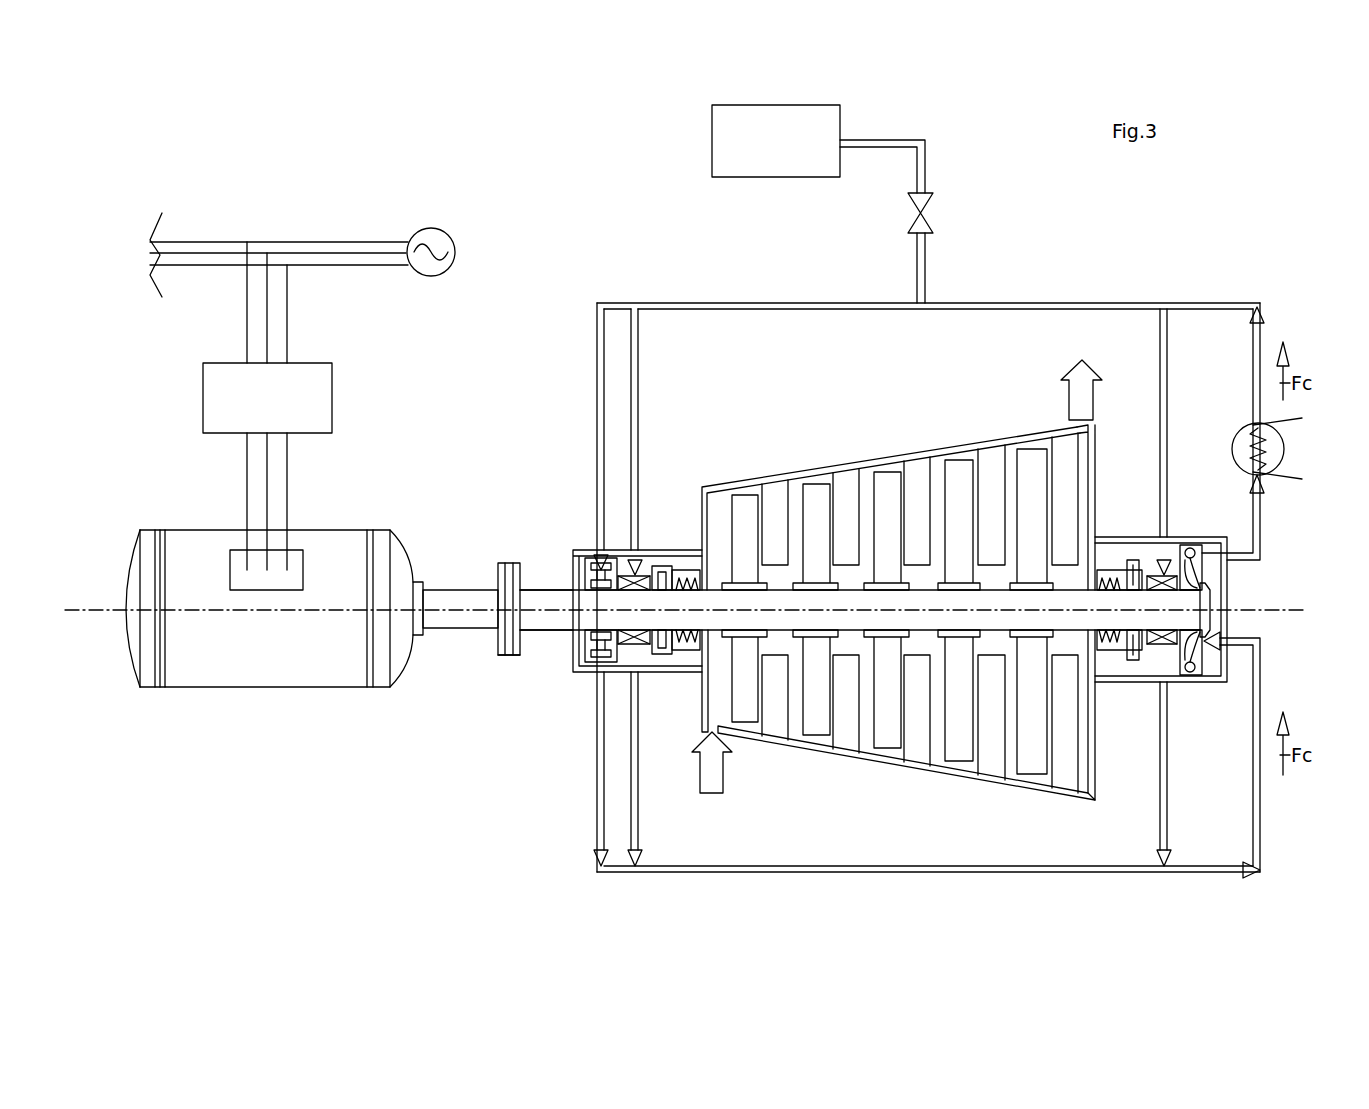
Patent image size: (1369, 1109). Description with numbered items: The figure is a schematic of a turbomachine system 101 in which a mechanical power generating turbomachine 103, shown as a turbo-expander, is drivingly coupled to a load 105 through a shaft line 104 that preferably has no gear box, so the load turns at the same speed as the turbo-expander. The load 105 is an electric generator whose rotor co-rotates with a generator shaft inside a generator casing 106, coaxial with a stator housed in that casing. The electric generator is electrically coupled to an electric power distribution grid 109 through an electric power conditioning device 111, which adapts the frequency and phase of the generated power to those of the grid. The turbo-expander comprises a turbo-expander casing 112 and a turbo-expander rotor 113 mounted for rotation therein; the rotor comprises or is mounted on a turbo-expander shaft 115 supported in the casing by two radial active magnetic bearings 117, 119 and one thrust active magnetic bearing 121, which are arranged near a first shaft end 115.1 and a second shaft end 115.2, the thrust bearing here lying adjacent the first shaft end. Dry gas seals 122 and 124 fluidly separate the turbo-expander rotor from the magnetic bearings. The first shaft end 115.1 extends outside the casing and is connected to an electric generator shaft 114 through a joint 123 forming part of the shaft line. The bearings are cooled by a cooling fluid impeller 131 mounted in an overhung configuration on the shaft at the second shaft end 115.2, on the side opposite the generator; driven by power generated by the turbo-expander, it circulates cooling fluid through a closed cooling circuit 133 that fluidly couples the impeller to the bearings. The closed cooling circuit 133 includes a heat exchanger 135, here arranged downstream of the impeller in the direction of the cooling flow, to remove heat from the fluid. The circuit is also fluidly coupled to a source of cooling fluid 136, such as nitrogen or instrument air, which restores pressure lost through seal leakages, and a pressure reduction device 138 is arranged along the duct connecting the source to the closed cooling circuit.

The turbomachine system 101 is at (897, 603).
The power generating turbomachine 103 is at (913, 780).
The shaft line 104 is at (508, 556).
The load 105 is at (278, 700).
The generator casing 106 is at (180, 668).
The electric power distribution grid 109 is at (270, 237).
The electric power conditioning device 111 is at (320, 386).
The turbo-expander casing 112 is at (775, 495).
The turbo-expander rotor 113 is at (745, 507).
The electric generator shaft 114 is at (438, 607).
The turbo-expander shaft 115 is at (898, 619).
The first shaft end 115.1 is at (575, 615).
The second shaft end 115.2 is at (1190, 613).
The radial active magnetic bearing 117 is at (1158, 575).
The radial active magnetic bearing 119 is at (640, 640).
The thrust active magnetic bearing 121 is at (590, 562).
The dry gas seal 122 is at (1110, 650).
The joint 123 is at (505, 643).
The dry gas seal 124 is at (688, 573).
The cooling fluid impeller 131 is at (1187, 547).
The closed cooling circuit 133 is at (1280, 292).
The heat exchanger 135 is at (1240, 445).
The source of cooling fluid 136 is at (722, 128).
The pressure reduction device 138 is at (928, 212).